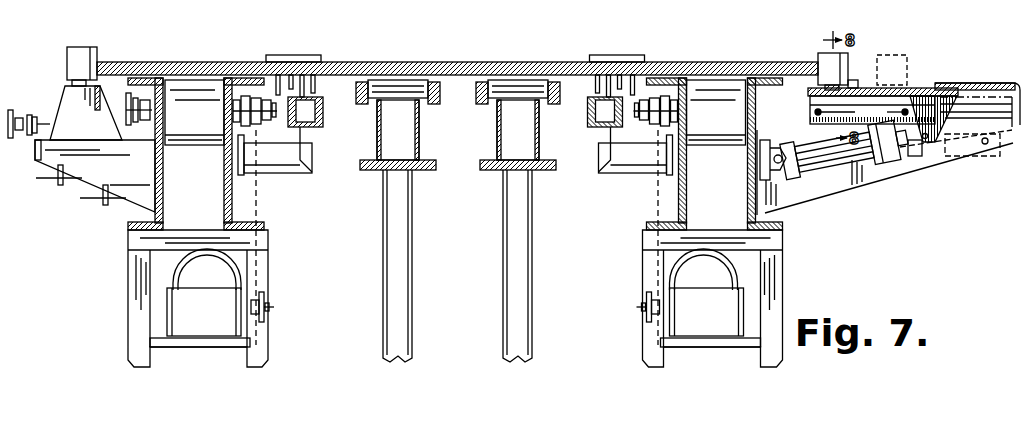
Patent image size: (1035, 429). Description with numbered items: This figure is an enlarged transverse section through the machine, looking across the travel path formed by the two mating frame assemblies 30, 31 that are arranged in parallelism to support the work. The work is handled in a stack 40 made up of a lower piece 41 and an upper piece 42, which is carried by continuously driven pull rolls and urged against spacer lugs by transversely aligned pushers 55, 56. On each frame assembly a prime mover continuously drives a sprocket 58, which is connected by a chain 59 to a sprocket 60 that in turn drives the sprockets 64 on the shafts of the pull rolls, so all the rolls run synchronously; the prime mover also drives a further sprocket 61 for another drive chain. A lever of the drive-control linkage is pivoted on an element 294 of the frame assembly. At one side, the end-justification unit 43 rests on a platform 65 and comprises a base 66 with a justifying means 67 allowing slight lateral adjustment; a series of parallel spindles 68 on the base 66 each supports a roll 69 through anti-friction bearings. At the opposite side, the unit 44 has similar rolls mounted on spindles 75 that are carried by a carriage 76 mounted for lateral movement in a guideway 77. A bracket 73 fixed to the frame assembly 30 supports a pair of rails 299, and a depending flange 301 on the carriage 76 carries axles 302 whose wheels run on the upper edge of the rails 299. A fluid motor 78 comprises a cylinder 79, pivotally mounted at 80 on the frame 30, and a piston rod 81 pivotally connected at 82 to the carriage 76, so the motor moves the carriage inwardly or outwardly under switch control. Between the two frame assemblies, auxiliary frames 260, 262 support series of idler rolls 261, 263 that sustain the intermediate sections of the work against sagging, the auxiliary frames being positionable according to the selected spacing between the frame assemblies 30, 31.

The frame assembly 30 is at (796, 239).
The frame assembly 31 is at (116, 231).
The stack 40 is at (751, 56).
The lower piece 41 is at (702, 62).
The upper piece 42 is at (676, 62).
The end-justification unit 43 is at (40, 74).
The unit 44 is at (864, 44).
The pusher 55 is at (626, 48).
The pusher 56 is at (299, 50).
The sprocket 58 is at (262, 343).
The chain 59 is at (258, 203).
The sprocket 60 is at (262, 126).
The sprocket 61 is at (270, 293).
The sprockets 64 is at (129, 126).
The platform 65 is at (89, 166).
The base 66 is at (70, 126).
The justifying means 67 is at (11, 110).
The spindles 68 is at (72, 84).
The roll 69 is at (83, 48).
The bracket 73 is at (868, 186).
The spindles 75 is at (853, 88).
The carriage 76 is at (917, 95).
The guideway 77 is at (980, 108).
The fluid motor 78 is at (840, 190).
The cylinder 79 is at (822, 168).
The pivotal mounting 80 is at (772, 170).
The piston rod 81 is at (912, 156).
The pivotal connection 82 is at (926, 140).
The auxiliary frame 260 is at (530, 246).
The idler rolls 261 is at (520, 82).
The auxiliary frame 262 is at (400, 262).
The idler rolls 263 is at (397, 82).
The element of the frame assembly 294 is at (673, 212).
The rails 299 is at (1003, 143).
The depending flange 301 is at (812, 102).
The axles 302 is at (872, 110).